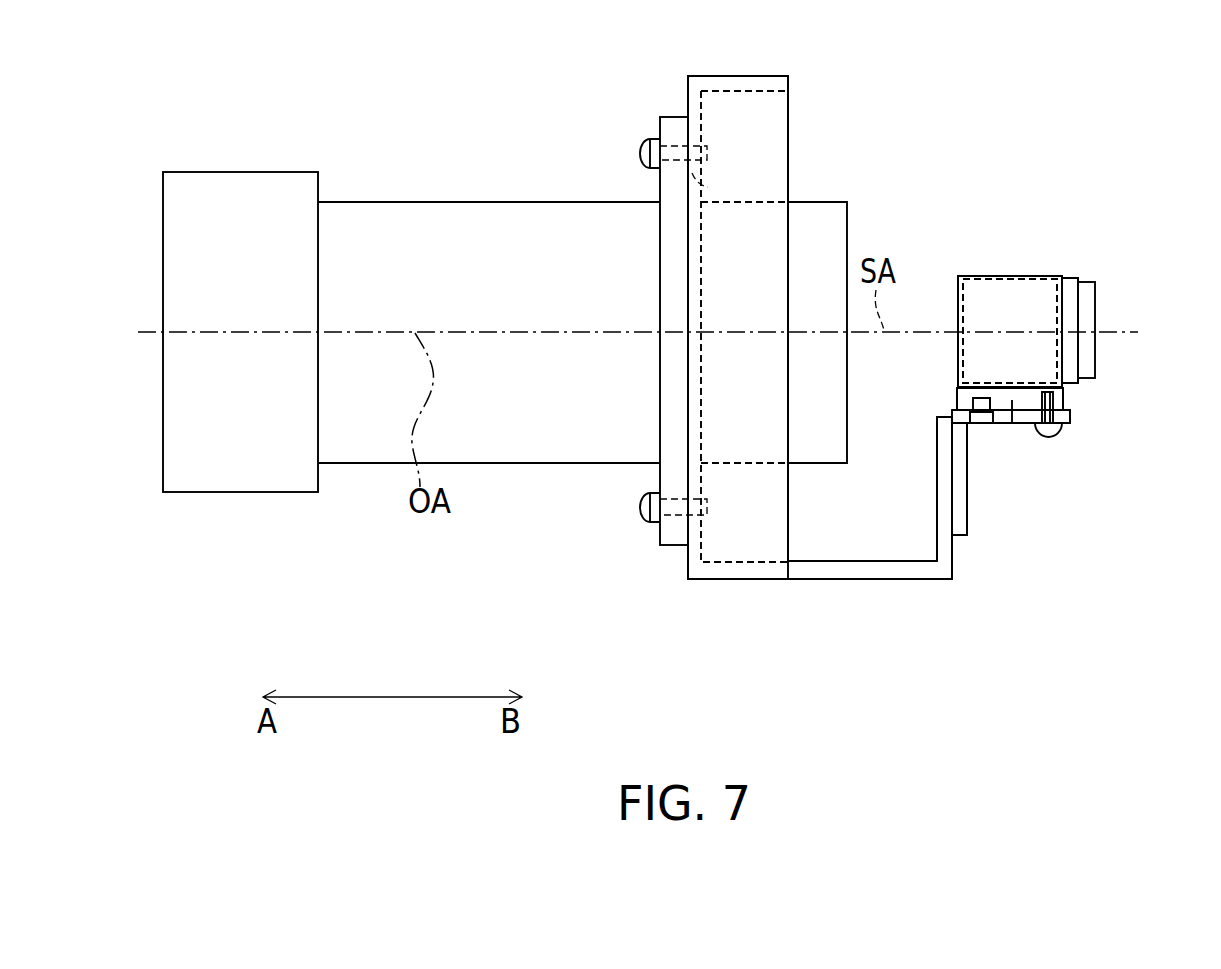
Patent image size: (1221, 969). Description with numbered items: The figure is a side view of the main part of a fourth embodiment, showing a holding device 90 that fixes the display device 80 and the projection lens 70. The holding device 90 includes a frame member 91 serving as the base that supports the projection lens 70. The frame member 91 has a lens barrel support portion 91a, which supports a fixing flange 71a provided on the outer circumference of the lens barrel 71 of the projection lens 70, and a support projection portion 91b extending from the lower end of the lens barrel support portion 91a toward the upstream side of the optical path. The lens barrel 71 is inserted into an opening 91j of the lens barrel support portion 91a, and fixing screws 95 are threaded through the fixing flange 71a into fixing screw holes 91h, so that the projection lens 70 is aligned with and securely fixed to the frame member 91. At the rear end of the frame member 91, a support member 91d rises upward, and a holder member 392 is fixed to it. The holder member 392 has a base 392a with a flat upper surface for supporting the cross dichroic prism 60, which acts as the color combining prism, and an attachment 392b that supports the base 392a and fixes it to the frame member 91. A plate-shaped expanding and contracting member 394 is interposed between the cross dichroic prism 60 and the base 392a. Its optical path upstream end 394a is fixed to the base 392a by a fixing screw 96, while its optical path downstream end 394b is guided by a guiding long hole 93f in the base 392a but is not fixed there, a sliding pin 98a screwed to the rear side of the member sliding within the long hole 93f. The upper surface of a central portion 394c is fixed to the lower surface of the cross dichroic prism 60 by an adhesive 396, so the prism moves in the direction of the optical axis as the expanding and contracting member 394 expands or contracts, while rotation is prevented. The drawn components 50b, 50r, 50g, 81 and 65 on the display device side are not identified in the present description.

The projection lens 70 is at (375, 155).
The lens barrel 71 is at (470, 202).
The fixing flange 71a is at (661, 117).
The frame member 91 is at (738, 589).
The lens barrel support portion 91a is at (748, 76).
The support projection portion 91b is at (870, 572).
The support member 91d is at (947, 500).
The fixing screw holes 91h is at (702, 162).
The opening 91j is at (645, 140).
The fixing screws 95 is at (641, 157).
The display device 80 is at (1047, 237).
The cross dichroic prism 60 is at (1022, 276).
The image sensor 50b is at (981, 276).
The image sensor 50r is at (990, 276).
The lens mount 81 is at (1068, 278).
The lens portion 50g is at (1088, 282).
The optical element 65 is at (1062, 310).
The expanding and contracting member 394 is at (1063, 403).
The adhesive 396 is at (960, 392).
The holder member 392 is at (1036, 501).
The base 392a is at (1068, 420).
The attachment 392b is at (960, 513).
The optical path upstream end 394a is at (1060, 395).
The optical path downstream end 394b is at (965, 405).
The fixing screw 96 is at (1055, 433).
The central portion 394c is at (1015, 425).
The sliding pin 98a is at (983, 425).
The guiding long hole 93f is at (975, 425).
The holding device 90 is at (662, 619).